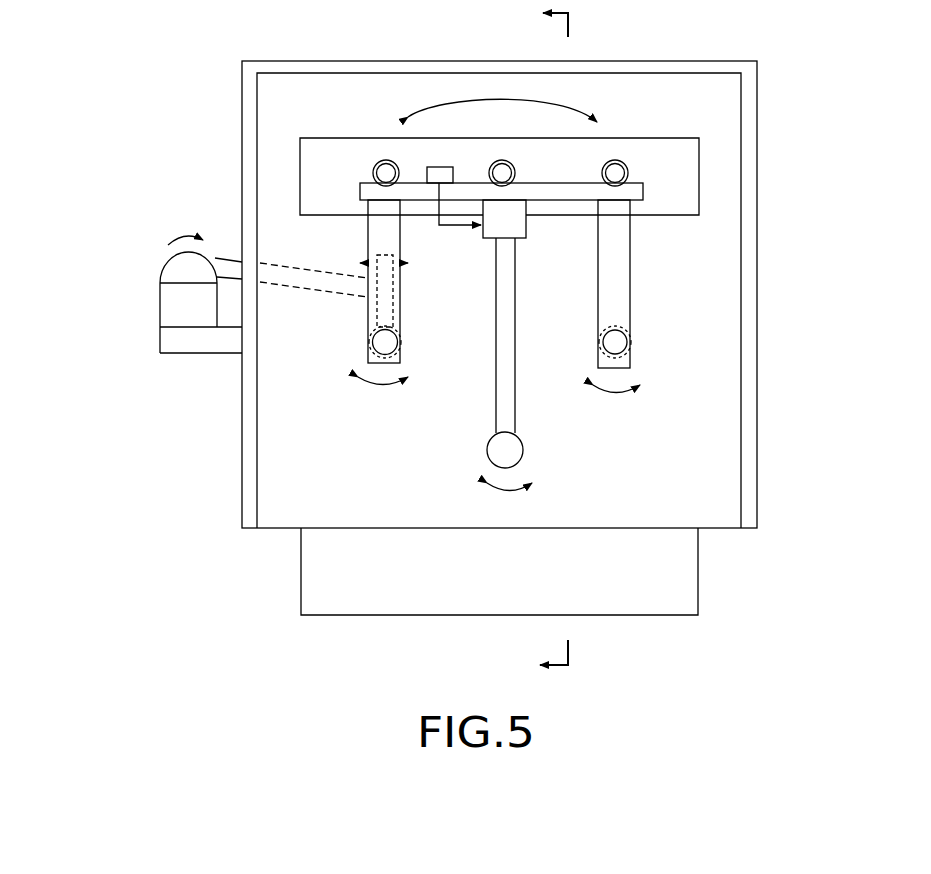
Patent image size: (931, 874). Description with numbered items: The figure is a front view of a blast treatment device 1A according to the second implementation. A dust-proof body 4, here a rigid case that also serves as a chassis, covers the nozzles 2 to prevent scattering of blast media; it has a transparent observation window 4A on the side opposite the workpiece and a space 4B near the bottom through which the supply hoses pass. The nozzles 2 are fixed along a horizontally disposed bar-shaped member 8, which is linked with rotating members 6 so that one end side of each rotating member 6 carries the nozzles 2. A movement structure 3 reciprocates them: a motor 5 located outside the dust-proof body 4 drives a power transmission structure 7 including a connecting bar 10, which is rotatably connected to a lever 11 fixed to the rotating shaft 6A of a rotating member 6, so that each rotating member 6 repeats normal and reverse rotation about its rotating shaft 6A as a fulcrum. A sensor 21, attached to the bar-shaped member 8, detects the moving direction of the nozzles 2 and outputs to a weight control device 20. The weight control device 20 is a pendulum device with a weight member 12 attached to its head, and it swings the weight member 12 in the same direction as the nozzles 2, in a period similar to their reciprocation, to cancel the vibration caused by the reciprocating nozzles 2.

The blast treatment device 1A is at (147, 103).
The nozzle 2 is at (384, 160).
The sensor 21 is at (440, 166).
The movement structure 3 is at (638, 291).
The dust-proof body 4 is at (758, 310).
The transparent observation window 4A is at (680, 200).
The space 4B is at (715, 515).
The motor 5 is at (160, 293).
The rotating member 6 is at (598, 292).
The rotating shaft 6A is at (401, 345).
The power transmission structure 7 is at (355, 360).
The bar-shaped member 8 is at (565, 205).
The connecting bar 10 is at (273, 284).
The lever 11 is at (367, 308).
The weight member 12 is at (487, 452).
The weight control device 20 is at (488, 238).